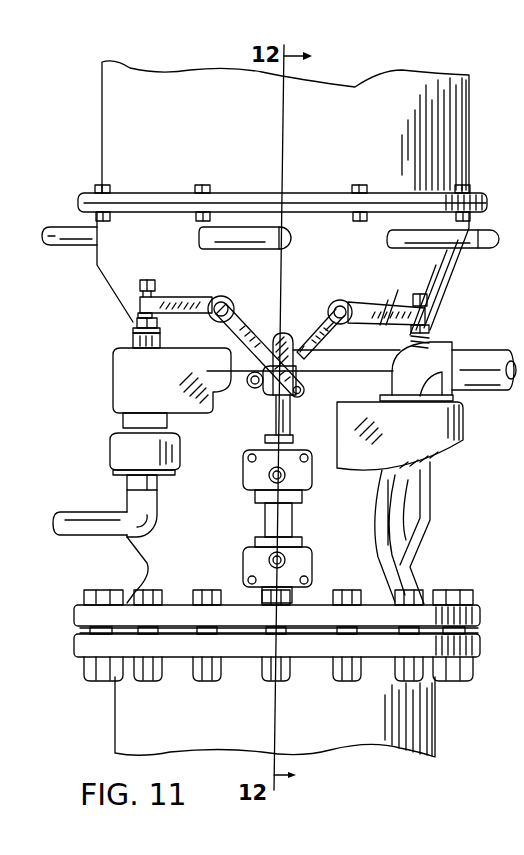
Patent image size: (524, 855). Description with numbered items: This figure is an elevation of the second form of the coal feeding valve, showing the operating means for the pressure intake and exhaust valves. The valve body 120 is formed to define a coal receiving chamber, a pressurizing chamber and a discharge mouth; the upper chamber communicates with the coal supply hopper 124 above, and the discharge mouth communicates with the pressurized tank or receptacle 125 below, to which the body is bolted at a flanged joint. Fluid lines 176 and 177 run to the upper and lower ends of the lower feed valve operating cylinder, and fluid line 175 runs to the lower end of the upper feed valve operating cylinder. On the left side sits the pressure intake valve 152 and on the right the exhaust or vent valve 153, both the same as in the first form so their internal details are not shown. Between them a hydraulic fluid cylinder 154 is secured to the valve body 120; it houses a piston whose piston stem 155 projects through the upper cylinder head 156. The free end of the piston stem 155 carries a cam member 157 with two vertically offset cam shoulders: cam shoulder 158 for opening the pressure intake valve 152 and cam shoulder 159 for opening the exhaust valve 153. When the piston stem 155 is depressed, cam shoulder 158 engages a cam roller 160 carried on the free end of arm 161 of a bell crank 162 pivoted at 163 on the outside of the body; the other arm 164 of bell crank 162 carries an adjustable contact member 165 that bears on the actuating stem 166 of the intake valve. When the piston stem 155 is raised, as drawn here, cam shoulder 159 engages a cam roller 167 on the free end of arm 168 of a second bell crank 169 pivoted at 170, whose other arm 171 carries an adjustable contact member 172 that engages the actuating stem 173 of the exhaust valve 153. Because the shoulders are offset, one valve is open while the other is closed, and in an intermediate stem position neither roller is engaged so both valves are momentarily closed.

The valve body 120 is at (432, 505).
The coal supply hopper 124 is at (102, 125).
The pressurized tank or receptacle 125 is at (115, 708).
The pressure intake valve 152 is at (110, 452).
The exhaust or vent valve 153 is at (454, 350).
The hydraulic fluid cylinder 154 is at (293, 516).
The piston stem 155 is at (274, 415).
The upper cylinder head 156 is at (290, 437).
The cam member 157 is at (286, 333).
The cam shoulder 158 is at (304, 349).
The cam shoulder 159 is at (258, 389).
The cam roller 160 is at (302, 389).
The arm 161 is at (252, 338).
The bell crank 162 is at (195, 297).
The pivot 163 is at (228, 297).
The arm 164 is at (164, 315).
The adjustable contact member 165 is at (147, 280).
The actuating stem 166 is at (135, 326).
The cam roller 167 is at (248, 372).
The arm 168 is at (327, 330).
The bell crank 169 is at (310, 333).
The pivot 170 is at (343, 300).
The arm 171 is at (378, 306).
The adjustable contact member 172 is at (416, 294).
The actuating stem 173 is at (432, 332).
The fluid line 175 is at (297, 238).
The fluid line 176 is at (60, 248).
The fluid line 177 is at (405, 232).